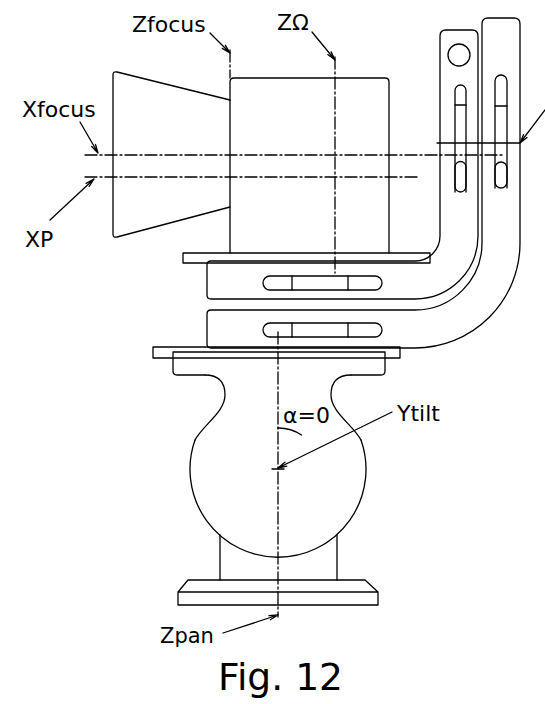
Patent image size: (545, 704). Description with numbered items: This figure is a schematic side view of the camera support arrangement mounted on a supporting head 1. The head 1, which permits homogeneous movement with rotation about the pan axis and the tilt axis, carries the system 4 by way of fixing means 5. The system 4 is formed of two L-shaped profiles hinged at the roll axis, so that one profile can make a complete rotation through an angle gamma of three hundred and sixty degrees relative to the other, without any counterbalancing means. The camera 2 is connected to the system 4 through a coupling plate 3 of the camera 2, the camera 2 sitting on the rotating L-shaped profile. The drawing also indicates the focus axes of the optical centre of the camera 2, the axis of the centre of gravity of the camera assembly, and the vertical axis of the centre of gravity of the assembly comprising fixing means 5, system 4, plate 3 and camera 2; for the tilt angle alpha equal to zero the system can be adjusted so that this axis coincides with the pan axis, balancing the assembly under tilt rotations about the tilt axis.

The head 1 is at (182, 482).
The camera 2 is at (106, 235).
The coupling plate 3 is at (176, 273).
The system 4 is at (491, 341).
The fixing means 5 is at (146, 367).